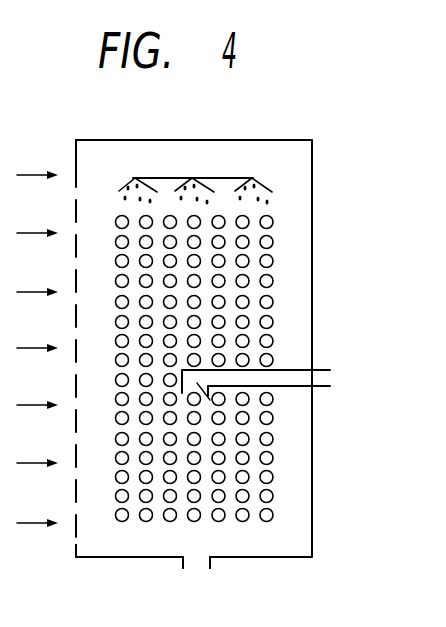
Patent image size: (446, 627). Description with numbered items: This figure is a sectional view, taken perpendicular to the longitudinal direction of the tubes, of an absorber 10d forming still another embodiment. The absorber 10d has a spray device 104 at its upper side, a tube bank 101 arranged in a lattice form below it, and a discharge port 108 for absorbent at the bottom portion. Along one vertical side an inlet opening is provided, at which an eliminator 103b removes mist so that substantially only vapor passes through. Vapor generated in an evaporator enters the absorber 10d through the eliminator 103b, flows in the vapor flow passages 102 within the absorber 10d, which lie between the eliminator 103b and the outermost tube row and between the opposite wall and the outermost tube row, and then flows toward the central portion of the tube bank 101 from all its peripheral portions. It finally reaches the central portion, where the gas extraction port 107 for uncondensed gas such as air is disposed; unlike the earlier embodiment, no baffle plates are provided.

The absorber 10d is at (323, 309).
The tube bank 101 is at (113, 235).
The vapor flow passages 102 is at (98, 502).
The eliminator 103b is at (74, 155).
The spray device 104 is at (172, 177).
The gas extraction port 107 is at (208, 402).
The discharge port 108 is at (197, 560).